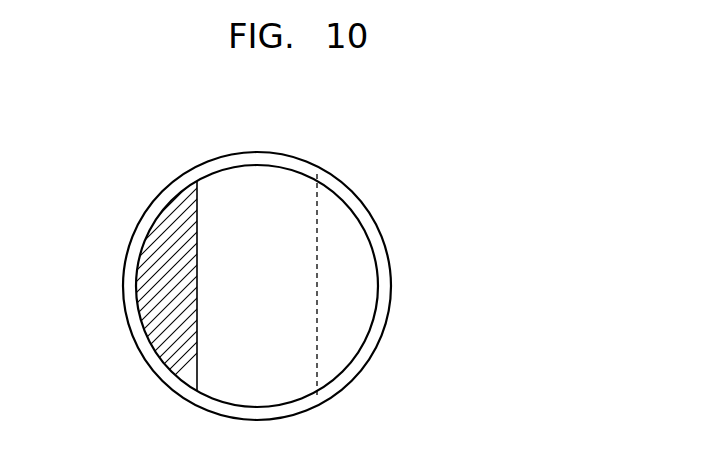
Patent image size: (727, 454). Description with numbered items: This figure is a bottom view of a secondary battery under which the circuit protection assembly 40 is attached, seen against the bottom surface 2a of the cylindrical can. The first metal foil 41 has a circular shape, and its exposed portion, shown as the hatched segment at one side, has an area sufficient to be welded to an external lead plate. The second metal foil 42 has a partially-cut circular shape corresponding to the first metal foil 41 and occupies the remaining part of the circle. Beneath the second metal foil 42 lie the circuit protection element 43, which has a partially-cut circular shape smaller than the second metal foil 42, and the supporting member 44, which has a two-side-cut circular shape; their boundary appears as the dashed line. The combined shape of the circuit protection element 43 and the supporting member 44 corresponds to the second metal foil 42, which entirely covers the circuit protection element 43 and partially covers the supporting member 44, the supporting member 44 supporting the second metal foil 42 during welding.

The circuit protection assembly 40 is at (348, 402).
The bottom surface 2a is at (147, 222).
The first metal foil 41 is at (148, 282).
The second metal foil 42 is at (253, 185).
The circuit protection element 43 is at (350, 243).
The supporting member 44 is at (300, 281).